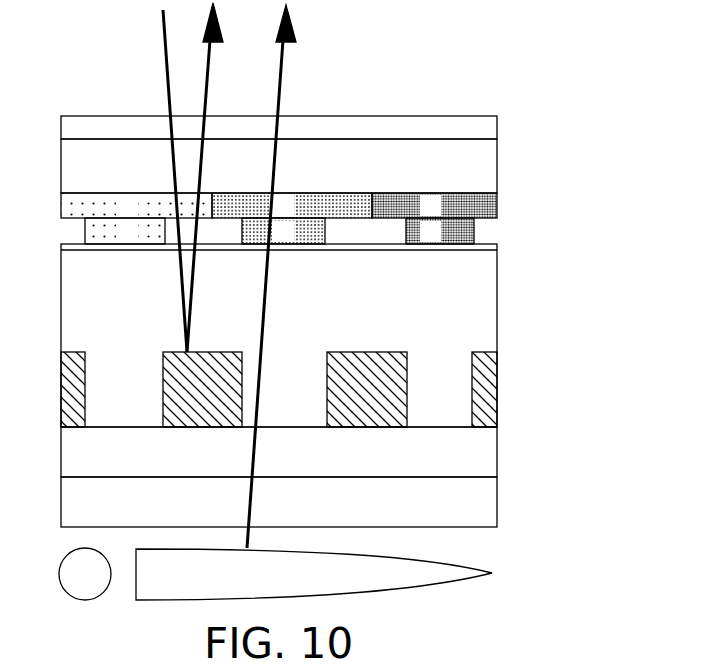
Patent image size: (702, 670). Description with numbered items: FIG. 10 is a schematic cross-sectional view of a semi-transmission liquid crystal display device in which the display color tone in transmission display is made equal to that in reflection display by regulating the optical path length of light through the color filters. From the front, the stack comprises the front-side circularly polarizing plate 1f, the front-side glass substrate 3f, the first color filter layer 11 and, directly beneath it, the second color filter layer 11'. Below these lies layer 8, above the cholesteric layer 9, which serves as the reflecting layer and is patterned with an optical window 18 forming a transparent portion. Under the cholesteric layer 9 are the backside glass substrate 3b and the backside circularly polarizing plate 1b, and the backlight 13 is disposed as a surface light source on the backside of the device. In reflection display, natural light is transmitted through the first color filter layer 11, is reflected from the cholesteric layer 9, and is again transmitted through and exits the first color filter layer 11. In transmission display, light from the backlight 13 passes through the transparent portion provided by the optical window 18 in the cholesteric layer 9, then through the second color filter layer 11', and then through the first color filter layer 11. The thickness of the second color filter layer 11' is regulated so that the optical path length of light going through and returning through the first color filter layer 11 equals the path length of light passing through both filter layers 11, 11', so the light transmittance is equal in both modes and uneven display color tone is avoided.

The front-side circularly polarizing plate 1f is at (490, 125).
The front-side glass substrate 3f is at (490, 171).
The first color filter layer 11 is at (315, 203).
The second color filter layer 11' is at (329, 232).
The liquid crystal layer 8 is at (490, 300).
The optical window 18 is at (442, 356).
The cholesteric layer 9 is at (489, 395).
The backside glass substrate 3b is at (488, 453).
The backside circularly polarizing plate 1b is at (488, 505).
The backlight 13 is at (492, 573).